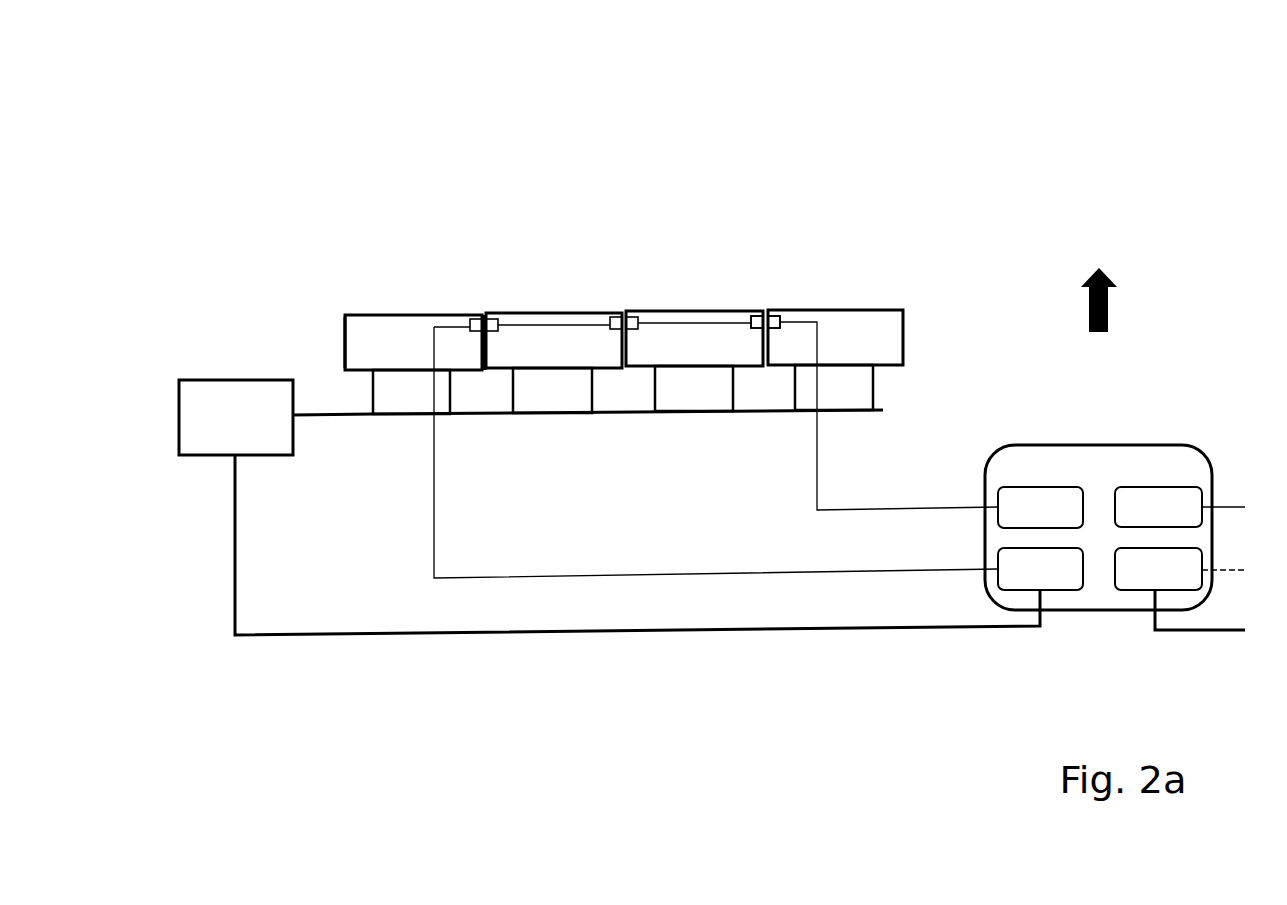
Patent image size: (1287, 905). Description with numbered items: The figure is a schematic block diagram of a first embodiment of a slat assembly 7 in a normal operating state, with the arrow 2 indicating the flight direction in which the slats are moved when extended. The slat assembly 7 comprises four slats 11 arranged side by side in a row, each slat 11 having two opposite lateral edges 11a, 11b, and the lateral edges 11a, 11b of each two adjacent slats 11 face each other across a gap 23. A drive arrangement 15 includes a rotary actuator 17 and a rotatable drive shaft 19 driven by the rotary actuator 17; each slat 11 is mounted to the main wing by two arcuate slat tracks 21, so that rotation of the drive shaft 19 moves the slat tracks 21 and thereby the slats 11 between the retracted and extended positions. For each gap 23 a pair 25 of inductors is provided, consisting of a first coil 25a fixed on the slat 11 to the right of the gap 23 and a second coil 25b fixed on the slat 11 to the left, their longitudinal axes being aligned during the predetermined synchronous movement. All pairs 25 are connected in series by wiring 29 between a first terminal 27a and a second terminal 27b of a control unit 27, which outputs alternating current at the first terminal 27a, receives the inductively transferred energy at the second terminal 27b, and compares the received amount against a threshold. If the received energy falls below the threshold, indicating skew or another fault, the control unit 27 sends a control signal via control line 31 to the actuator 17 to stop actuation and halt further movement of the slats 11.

The flight direction 2 is at (1110, 310).
The slat assembly 7 is at (295, 153).
The slat 11 is at (383, 325).
The lateral edge 11a is at (343, 345).
The lateral edge 11b is at (489, 352).
The drive arrangement 15 is at (268, 352).
The rotary actuator 17 is at (187, 402).
The drive shaft 19 is at (341, 418).
The slat track 21 is at (373, 397).
The gap 23 is at (487, 317).
The pair of inductors 25 is at (777, 292).
The first inductor 25a is at (785, 312).
The second inductor 25b is at (757, 312).
The control unit 27 is at (1175, 452).
The first terminal 27a is at (1030, 490).
The second terminal 27b is at (1200, 582).
The wiring 29 is at (843, 508).
The control line 31 is at (797, 630).